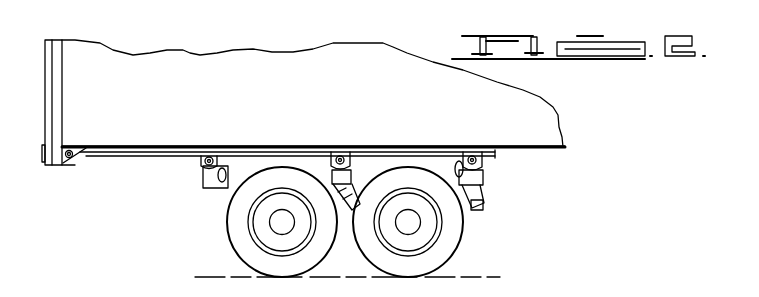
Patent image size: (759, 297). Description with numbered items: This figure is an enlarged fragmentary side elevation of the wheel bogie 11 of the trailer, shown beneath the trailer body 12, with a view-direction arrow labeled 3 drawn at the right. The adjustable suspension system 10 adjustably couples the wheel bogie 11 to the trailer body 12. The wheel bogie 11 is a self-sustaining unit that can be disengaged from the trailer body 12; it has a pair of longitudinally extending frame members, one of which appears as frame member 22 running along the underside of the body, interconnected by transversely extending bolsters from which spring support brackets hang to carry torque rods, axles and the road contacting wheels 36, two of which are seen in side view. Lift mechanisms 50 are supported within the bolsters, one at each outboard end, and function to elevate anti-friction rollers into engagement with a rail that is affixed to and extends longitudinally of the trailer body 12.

The adjustable suspension system 10 is at (185, 173).
The wheel bogie 11 is at (207, 190).
The trailer body 12 is at (233, 67).
The frame member 22 is at (307, 147).
The road contacting wheel 36 is at (232, 246).
The lift mechanism 50 is at (222, 146).
The view direction arrow 3 is at (595, 227).